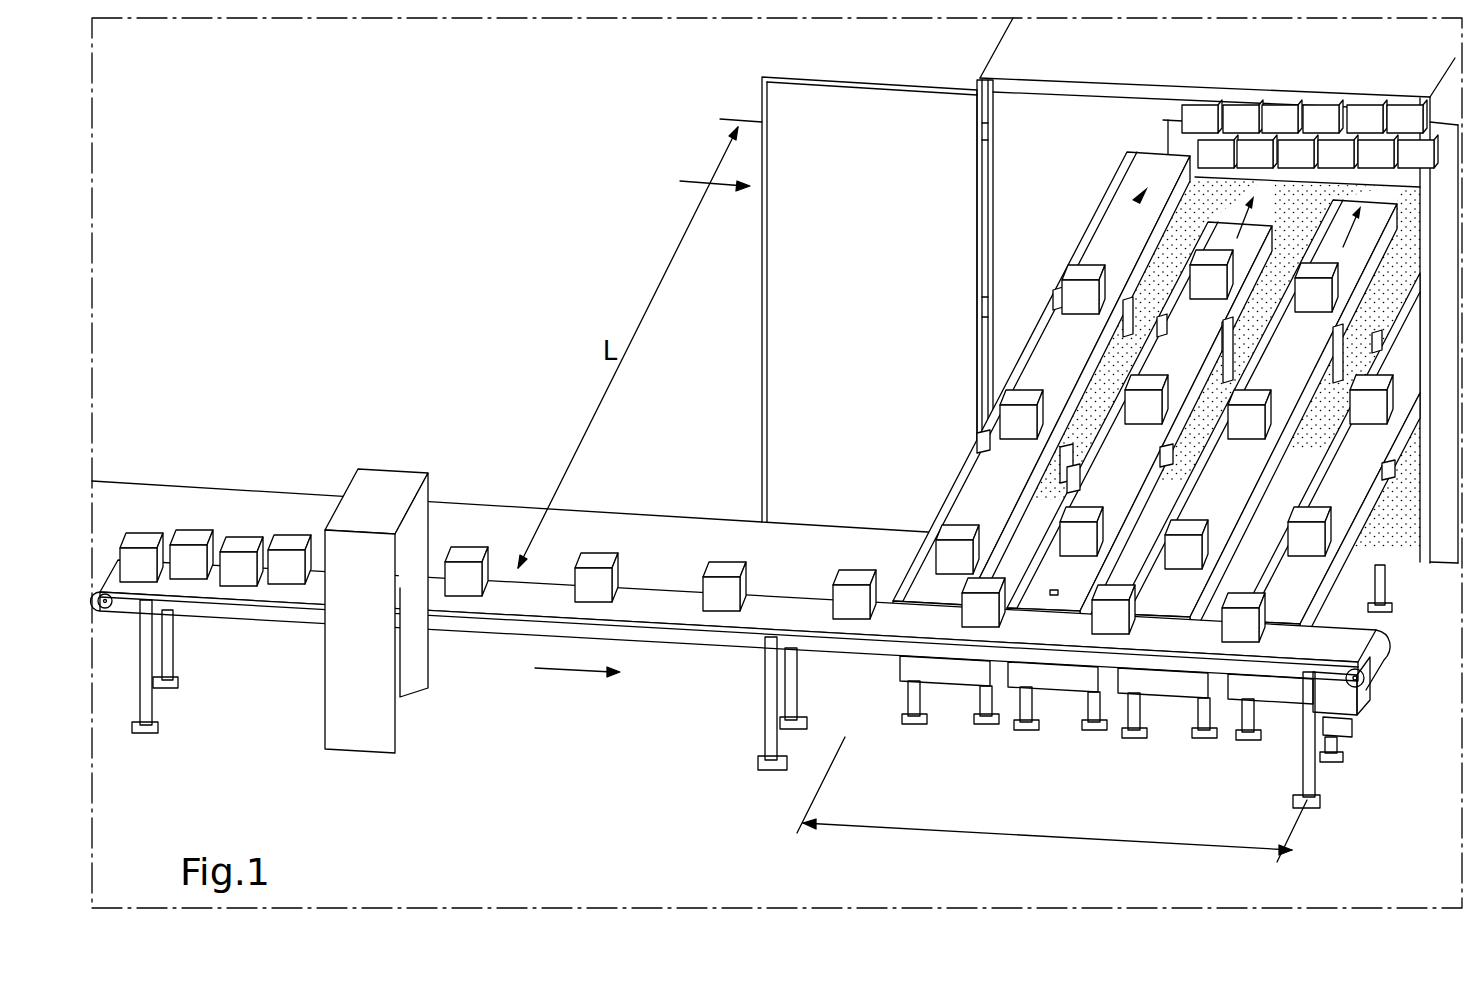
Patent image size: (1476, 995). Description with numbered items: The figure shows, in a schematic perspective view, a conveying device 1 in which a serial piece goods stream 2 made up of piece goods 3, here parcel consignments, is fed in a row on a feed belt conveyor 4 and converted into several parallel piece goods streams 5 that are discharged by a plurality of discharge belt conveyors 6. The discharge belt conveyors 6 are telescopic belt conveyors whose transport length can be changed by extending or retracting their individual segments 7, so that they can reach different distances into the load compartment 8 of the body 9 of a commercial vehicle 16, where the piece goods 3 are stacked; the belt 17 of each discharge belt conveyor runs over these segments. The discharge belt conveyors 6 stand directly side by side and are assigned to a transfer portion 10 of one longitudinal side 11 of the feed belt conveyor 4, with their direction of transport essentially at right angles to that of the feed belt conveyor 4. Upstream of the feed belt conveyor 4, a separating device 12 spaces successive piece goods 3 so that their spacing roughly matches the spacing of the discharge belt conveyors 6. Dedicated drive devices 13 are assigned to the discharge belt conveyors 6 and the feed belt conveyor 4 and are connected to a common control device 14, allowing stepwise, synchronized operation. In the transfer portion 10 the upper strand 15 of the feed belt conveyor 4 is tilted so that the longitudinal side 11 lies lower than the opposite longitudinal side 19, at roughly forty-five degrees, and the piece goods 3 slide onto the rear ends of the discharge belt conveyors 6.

The conveying device 1 is at (428, 238).
The piece goods stream 2 is at (723, 548).
The piece goods 3 is at (195, 538).
The feed belt conveyor 4 is at (656, 690).
The piece goods streams 5 is at (1152, 160).
The discharge belt conveyors 6 is at (1030, 300).
The segments 7 is at (1108, 247).
The load compartment 8 is at (1026, 236).
The body 9 is at (1022, 57).
The transfer portion 10 is at (1052, 799).
The longitudinal side 11 is at (1057, 593).
The separating device 12 is at (385, 478).
The drive devices 13 is at (945, 672).
The control device 14 is at (1342, 727).
The upper strand 15 is at (670, 597).
The commercial vehicle 16 is at (640, 343).
The belt 17 is at (1054, 366).
The opposite longitudinal side 19 is at (1225, 668).